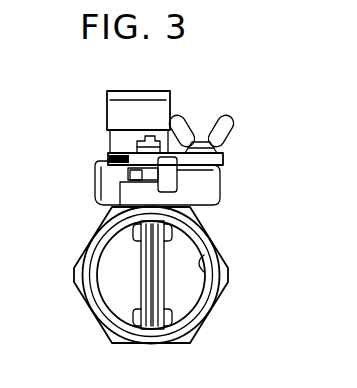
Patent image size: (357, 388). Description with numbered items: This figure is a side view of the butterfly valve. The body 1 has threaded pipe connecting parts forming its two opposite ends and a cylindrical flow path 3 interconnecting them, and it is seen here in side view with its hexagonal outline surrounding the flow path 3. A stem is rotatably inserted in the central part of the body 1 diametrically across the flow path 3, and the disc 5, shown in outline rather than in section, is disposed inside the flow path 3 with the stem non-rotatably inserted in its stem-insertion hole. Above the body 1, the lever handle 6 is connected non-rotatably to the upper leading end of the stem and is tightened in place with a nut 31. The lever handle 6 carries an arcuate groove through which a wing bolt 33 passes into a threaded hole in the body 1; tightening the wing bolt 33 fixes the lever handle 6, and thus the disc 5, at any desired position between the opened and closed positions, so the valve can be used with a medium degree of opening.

The body 1 is at (104, 324).
The cylindrical flow path 3 is at (204, 254).
The disc 5 is at (163, 285).
The lever handle 6 is at (172, 98).
The nut 31 is at (118, 150).
The wing bolt 33 is at (238, 129).